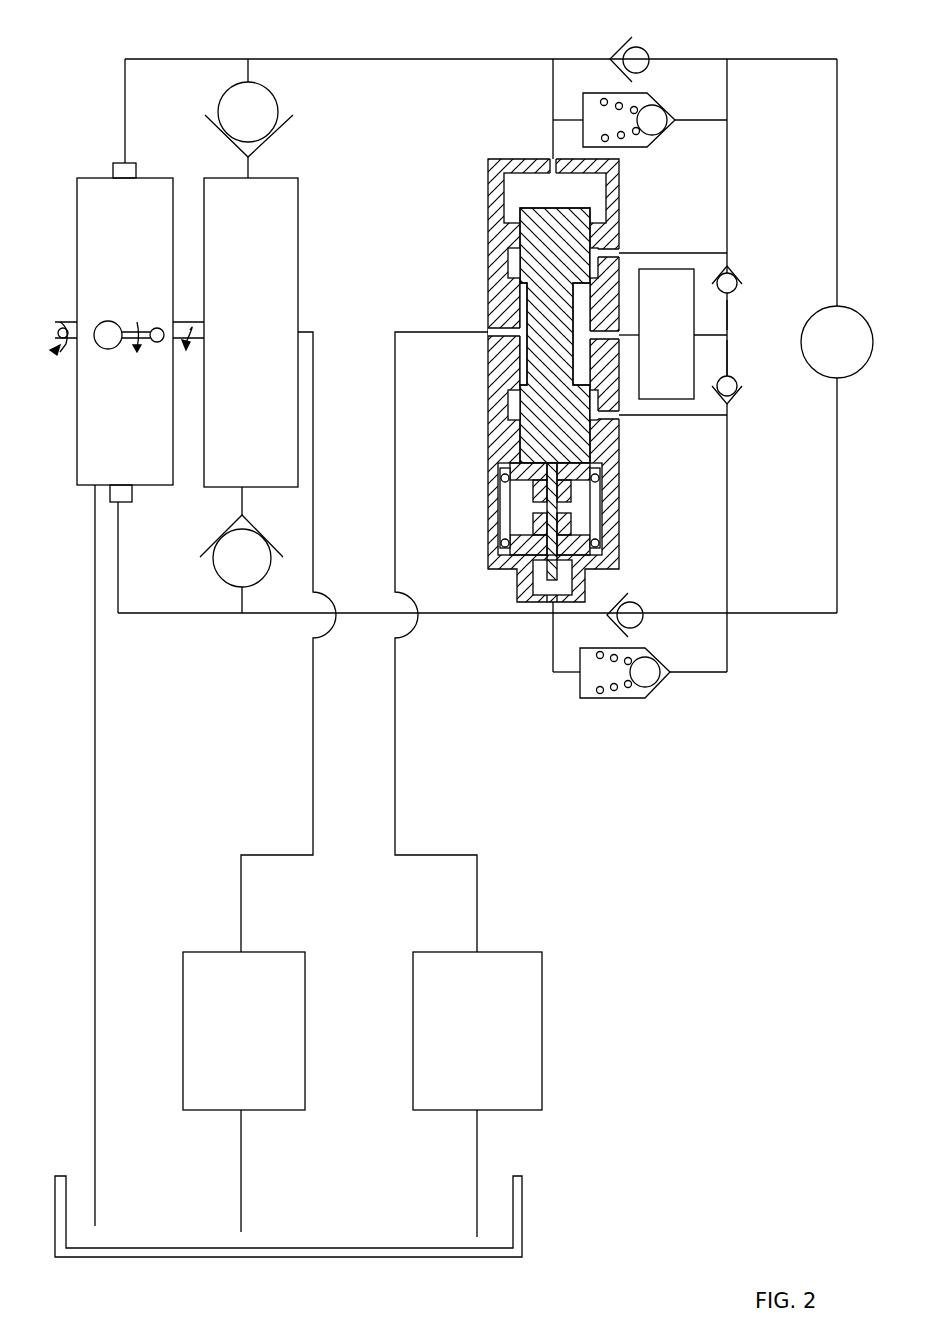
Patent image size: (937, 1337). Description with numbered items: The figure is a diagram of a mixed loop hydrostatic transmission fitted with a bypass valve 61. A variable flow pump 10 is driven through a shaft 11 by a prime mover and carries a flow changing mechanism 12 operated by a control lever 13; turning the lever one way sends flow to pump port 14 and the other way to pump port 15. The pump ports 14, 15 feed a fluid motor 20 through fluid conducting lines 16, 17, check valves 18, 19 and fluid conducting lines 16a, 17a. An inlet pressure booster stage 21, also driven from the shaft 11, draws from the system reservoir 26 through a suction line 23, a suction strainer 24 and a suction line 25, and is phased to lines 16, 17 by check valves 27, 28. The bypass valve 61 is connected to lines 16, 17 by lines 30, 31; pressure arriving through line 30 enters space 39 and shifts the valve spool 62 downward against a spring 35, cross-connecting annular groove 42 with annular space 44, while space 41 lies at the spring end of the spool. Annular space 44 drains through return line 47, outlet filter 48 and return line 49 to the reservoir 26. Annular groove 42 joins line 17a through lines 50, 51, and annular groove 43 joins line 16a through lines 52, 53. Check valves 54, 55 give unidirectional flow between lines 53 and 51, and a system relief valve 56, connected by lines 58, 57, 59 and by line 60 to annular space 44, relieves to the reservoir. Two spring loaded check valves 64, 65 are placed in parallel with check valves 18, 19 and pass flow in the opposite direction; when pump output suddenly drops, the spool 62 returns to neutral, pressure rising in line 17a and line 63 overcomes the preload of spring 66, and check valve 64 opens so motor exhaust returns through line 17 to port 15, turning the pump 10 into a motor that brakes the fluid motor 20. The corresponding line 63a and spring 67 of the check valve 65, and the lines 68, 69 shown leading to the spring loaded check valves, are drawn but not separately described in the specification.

The variable flow pump 10 is at (136, 250).
The shaft 11 is at (62, 318).
The flow changing mechanism 12 is at (105, 322).
The control lever 13 is at (157, 325).
The pump port 14 is at (128, 168).
The pump port 15 is at (130, 500).
The fluid conducting line 16 is at (410, 59).
The fluid conducting line 16a is at (805, 59).
The fluid conducting line 17 is at (453, 614).
The fluid conducting line 17a is at (837, 540).
The check valve 18 is at (648, 52).
The check valve 19 is at (642, 606).
The fluid motor 20 is at (840, 355).
The inlet pressure booster stage 21 is at (256, 345).
The suction line 23 is at (315, 785).
The suction strainer 24 is at (241, 1040).
The suction line 25 is at (242, 1176).
The system reservoir 26 is at (345, 1258).
The check valve 27 is at (262, 112).
The check valve 28 is at (258, 548).
The line 30 is at (548, 138).
The line 31 is at (555, 618).
The spring 35 is at (588, 515).
The space 39 is at (559, 202).
The space 41 is at (540, 578).
The annular groove 42 is at (510, 405).
The annular groove 43 is at (510, 262).
The annular space 44 is at (523, 360).
The return line 47 is at (395, 548).
The outlet filter 48 is at (478, 1040).
The return line 49 is at (478, 1162).
The line 50 is at (685, 416).
The line 51 is at (728, 540).
The line 52 is at (672, 253).
The line 53 is at (728, 185).
The check valve 54 is at (732, 280).
The check valve 55 is at (735, 390).
The system relief valve 56 is at (671, 360).
The line 57 is at (728, 318).
The line 58 is at (728, 366).
The line 59 is at (707, 334).
The line 60 is at (632, 335).
The bypass valve 61 is at (539, 330).
The valve spool 62 is at (521, 228).
The line 63 is at (727, 648).
The solenoid line 63a is at (699, 120).
The spring loaded check valve 64 is at (637, 698).
The spring loaded check valve 65 is at (640, 150).
The spring 66 is at (598, 698).
The solenoid valve 67 is at (604, 98).
The pilot line 68 is at (552, 651).
The pilot line 69 is at (556, 120).